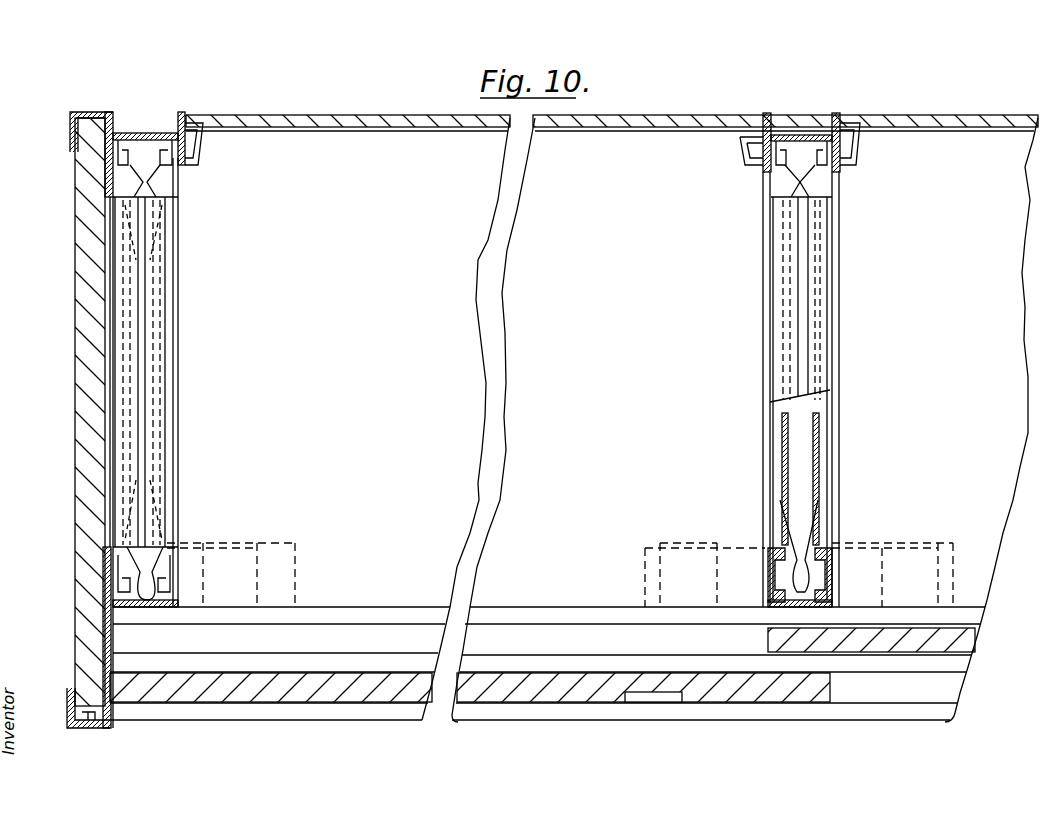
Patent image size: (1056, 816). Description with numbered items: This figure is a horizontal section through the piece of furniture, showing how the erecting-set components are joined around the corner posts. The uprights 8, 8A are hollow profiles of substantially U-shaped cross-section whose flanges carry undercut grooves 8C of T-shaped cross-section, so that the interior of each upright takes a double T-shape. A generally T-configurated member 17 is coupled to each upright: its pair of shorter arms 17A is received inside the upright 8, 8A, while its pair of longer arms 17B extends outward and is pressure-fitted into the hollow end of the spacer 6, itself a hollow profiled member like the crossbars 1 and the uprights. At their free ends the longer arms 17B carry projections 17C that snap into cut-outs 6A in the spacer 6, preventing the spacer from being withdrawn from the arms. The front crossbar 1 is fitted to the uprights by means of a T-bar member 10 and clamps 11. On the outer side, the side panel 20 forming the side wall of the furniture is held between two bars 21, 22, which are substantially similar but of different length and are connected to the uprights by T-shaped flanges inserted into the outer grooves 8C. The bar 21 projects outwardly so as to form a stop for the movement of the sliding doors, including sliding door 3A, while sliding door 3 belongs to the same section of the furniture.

The horizontal crossbar 1 is at (361, 608).
The sliding door 3 is at (953, 645).
The sliding door 3A is at (258, 695).
The spacer 6 is at (138, 378).
The cut-out 6A is at (128, 330).
The upright 8 is at (110, 619).
The upright 8A is at (137, 133).
The undercut groove 8C is at (167, 140).
The T-bar member 10 is at (736, 558).
The clamp 11 is at (672, 542).
The T-configurated member 17 is at (120, 182).
The shorter arm 17A is at (110, 136).
The longer arm 17B is at (123, 264).
The projection 17C is at (818, 426).
The side panel 20 is at (88, 228).
The bar 21 is at (108, 722).
The bar 22 is at (106, 114).